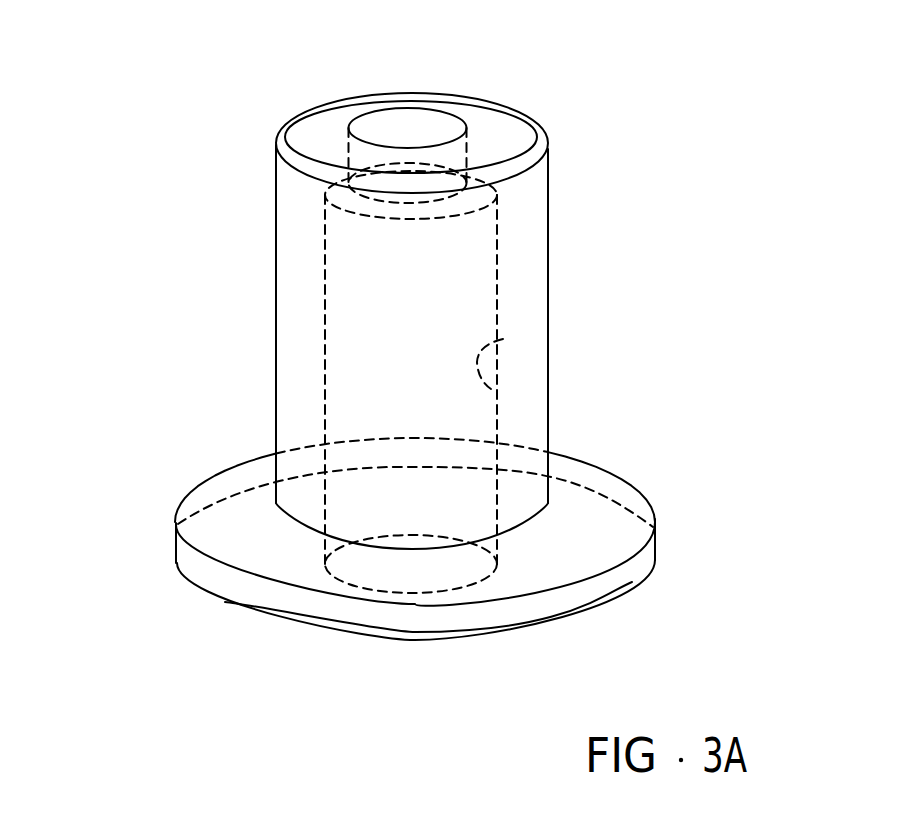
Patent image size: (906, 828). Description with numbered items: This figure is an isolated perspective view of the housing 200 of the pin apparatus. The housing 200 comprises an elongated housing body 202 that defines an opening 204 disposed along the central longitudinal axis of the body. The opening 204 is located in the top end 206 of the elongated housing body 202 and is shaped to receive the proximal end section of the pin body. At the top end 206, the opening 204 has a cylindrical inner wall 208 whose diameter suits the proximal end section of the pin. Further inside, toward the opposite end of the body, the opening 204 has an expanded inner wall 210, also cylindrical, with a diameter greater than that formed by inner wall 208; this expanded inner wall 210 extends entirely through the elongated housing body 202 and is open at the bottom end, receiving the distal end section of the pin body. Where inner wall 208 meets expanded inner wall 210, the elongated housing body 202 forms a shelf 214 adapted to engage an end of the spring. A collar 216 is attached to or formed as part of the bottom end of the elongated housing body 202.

The housing 200 is at (181, 437).
The elongated housing body 202 is at (549, 252).
The opening 204 is at (420, 53).
The top end 206 is at (488, 131).
The inner wall 208 is at (405, 128).
The expanded inner wall 210 is at (503, 339).
The shelf 214 is at (345, 192).
The collar 216 is at (175, 545).